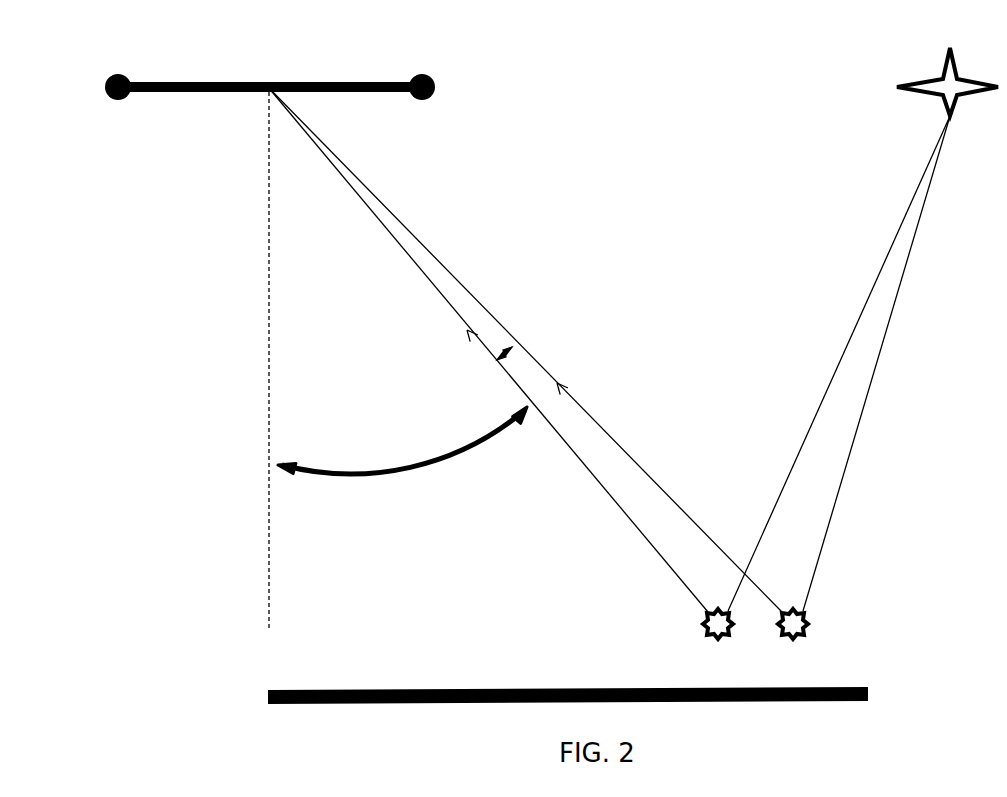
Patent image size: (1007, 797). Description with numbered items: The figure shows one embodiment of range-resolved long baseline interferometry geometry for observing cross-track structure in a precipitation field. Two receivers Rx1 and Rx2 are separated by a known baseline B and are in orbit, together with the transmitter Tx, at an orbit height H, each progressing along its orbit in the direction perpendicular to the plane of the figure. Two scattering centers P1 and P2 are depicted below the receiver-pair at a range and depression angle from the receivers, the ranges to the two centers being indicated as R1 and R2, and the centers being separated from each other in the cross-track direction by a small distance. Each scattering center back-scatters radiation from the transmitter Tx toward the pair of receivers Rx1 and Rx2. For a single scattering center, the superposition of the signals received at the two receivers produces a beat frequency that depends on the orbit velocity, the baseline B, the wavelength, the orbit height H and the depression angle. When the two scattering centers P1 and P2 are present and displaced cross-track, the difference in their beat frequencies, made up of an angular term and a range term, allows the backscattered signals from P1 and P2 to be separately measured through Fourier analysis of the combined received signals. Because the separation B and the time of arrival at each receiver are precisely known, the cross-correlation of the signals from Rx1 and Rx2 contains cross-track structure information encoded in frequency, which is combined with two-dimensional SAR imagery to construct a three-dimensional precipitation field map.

The baseline B is at (420, 62).
The first receiver Rx1 is at (126, 115).
The second receiver Rx2 is at (455, 87).
The transmitter Tx is at (938, 79).
The range to first scattering center R1 is at (488, 349).
The range to second scattering center R2 is at (525, 349).
The orbit height H is at (252, 361).
The first scattering center P1 is at (699, 633).
The second scattering center P2 is at (814, 626).